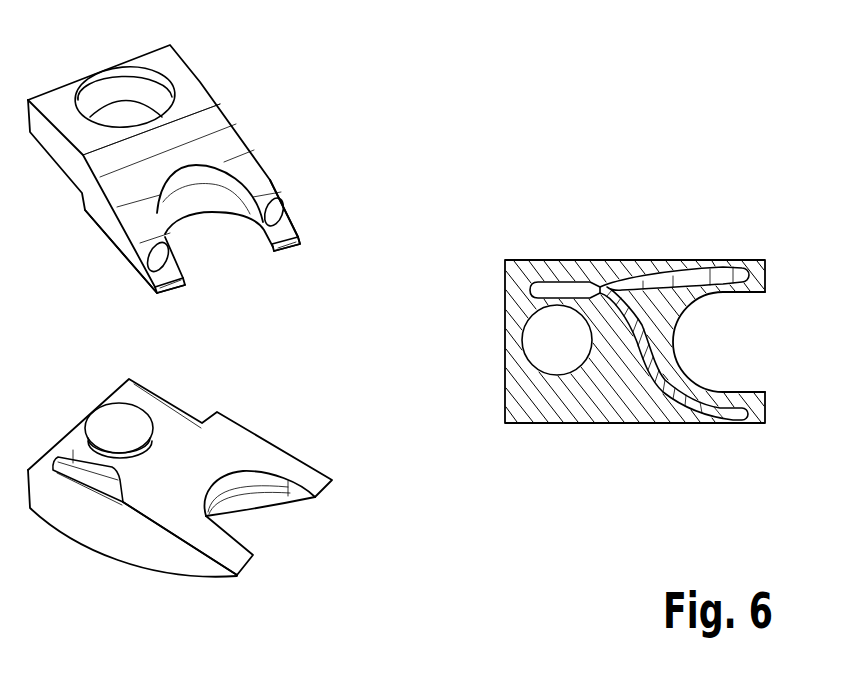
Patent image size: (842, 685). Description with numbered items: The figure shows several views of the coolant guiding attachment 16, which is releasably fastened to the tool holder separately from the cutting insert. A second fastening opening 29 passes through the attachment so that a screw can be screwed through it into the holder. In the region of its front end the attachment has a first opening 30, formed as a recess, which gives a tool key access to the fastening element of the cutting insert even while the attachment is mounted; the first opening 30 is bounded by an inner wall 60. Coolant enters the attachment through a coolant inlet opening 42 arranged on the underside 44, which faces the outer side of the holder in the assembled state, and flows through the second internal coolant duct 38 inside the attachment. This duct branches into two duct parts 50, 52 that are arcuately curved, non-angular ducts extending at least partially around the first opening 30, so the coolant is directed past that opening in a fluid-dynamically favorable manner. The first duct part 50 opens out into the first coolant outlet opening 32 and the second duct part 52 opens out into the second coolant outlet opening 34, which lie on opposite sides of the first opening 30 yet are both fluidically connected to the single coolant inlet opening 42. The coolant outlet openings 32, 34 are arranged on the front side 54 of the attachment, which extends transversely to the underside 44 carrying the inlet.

The coolant guiding attachment 16 is at (190, 88).
The second fastening opening 29 is at (107, 86).
The first opening 30 is at (208, 260).
The first coolant outlet opening 32 is at (152, 267).
The second coolant outlet opening 34 is at (279, 211).
The second internal coolant duct 38 is at (605, 283).
The coolant inlet opening 42 is at (78, 463).
The underside 44 is at (215, 437).
The first duct part 50 is at (670, 408).
The second duct part 52 is at (680, 271).
The front side 54 is at (172, 288).
The inner wall 60 is at (193, 193).